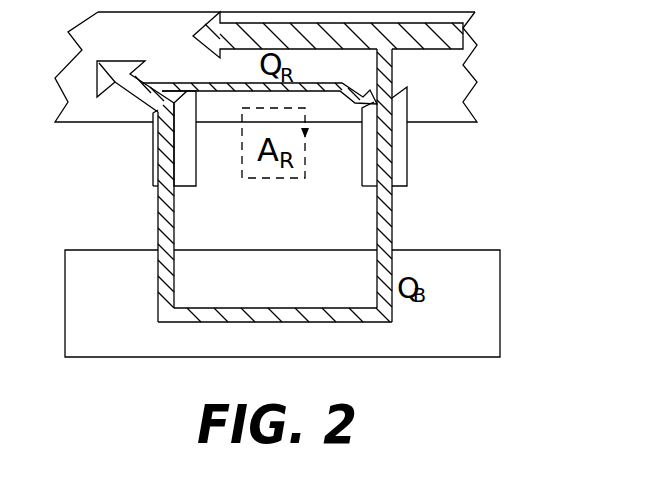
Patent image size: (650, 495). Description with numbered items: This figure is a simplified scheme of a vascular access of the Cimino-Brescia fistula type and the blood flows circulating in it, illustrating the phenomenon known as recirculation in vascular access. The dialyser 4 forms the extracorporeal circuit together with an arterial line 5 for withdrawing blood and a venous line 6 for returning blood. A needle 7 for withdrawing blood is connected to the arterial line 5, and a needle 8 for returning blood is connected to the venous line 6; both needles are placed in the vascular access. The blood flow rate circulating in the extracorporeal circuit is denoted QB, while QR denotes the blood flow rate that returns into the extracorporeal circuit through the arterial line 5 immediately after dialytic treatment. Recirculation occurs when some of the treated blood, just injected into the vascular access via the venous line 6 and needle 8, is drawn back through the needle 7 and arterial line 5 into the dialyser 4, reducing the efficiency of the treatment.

The dialyser 4 is at (492, 307).
The arterial line 5 is at (397, 217).
The venous line 6 is at (158, 217).
The needle for withdrawing blood 7 is at (397, 155).
The needle for returning blood 8 is at (153, 153).